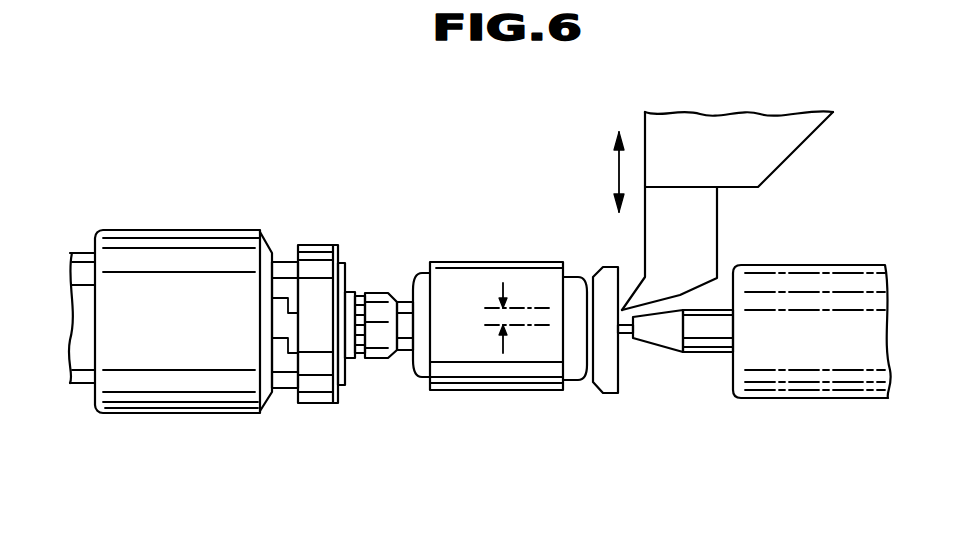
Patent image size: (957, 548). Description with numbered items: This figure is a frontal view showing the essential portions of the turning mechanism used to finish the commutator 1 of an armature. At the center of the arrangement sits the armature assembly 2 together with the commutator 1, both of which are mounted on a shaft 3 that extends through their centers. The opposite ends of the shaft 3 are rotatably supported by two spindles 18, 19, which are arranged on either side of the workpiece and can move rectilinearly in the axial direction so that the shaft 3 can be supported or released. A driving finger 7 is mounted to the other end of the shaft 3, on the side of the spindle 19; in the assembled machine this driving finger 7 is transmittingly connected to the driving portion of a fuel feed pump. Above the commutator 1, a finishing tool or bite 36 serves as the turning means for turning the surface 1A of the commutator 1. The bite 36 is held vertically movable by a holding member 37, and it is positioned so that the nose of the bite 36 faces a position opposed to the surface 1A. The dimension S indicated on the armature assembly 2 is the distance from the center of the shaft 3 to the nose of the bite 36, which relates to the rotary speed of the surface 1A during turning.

The spindle 19 is at (82, 253).
The driving finger 7 is at (376, 358).
The armature assembly 2 is at (497, 392).
The commutator 1 is at (605, 385).
The surface of the commutator 1A is at (620, 380).
The shaft 3 is at (633, 337).
The holding member 37 is at (790, 140).
The finishing tool or bite 36 is at (705, 230).
The spindle 18 is at (797, 400).